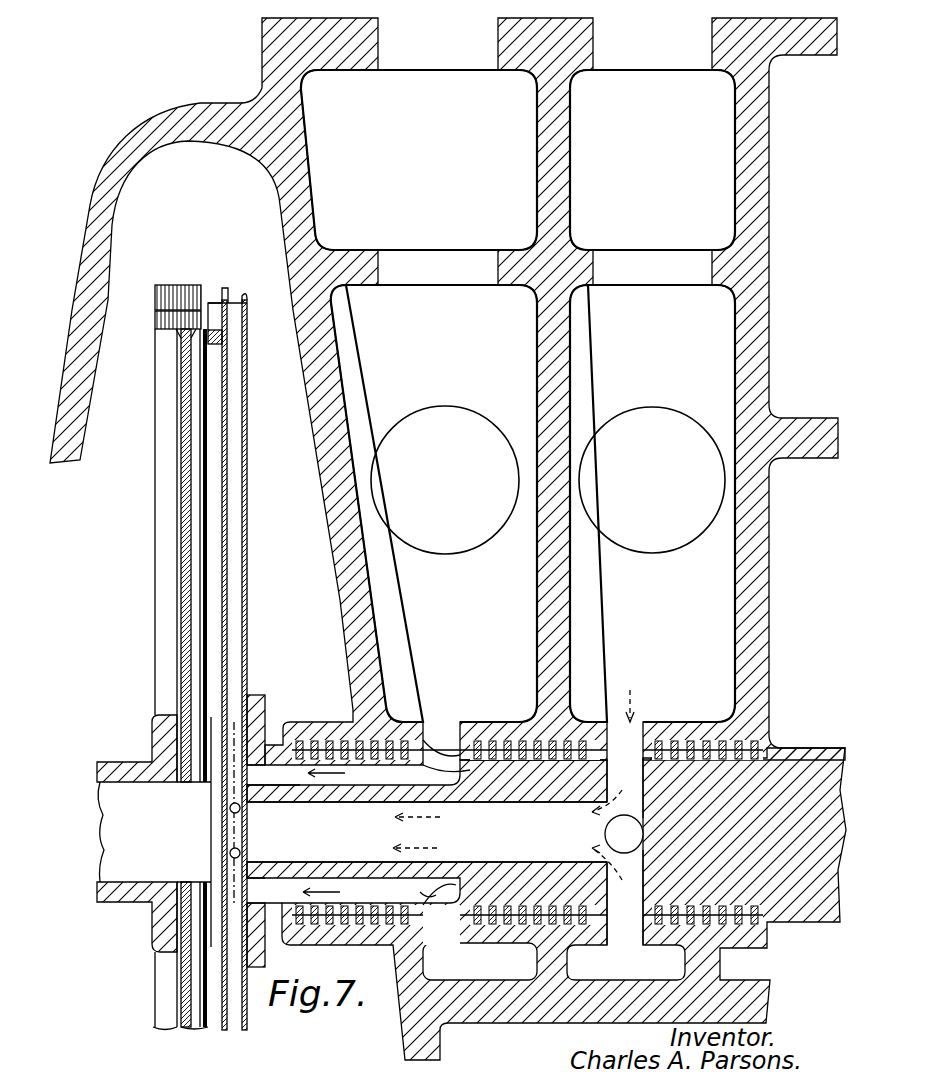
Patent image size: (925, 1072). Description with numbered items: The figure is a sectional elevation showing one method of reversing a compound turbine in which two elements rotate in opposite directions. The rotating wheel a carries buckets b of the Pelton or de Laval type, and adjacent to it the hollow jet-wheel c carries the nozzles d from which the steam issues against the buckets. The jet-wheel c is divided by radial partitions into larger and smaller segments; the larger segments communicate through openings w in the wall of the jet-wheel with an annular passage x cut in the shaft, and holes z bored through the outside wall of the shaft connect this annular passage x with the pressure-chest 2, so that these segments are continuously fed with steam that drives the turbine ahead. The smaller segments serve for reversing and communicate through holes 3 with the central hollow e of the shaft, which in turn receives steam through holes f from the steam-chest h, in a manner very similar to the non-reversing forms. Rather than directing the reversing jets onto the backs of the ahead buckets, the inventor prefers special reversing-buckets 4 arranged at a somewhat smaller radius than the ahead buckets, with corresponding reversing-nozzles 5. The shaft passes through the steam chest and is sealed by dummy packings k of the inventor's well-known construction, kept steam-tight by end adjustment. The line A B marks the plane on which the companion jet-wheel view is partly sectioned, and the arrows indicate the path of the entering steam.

The pressure-chest 2 is at (419, 396).
The steam-chest h is at (652, 396).
The dummy packings k is at (400, 752).
The holes z is at (416, 766).
The annular passage x is at (305, 834).
The openings w is at (273, 774).
The central hollow of the shaft e is at (427, 832).
The holes f is at (617, 851).
The section line A B A is at (230, 756).
The section line A B is at (231, 880).
The holes 3 is at (240, 808).
The reversing-buckets 4 is at (155, 323).
The reversing-nozzles 5 is at (215, 337).
The rotating wheel a is at (181, 487).
The buckets b is at (178, 283).
The jet-wheel c is at (247, 444).
The nozzles d is at (227, 293).